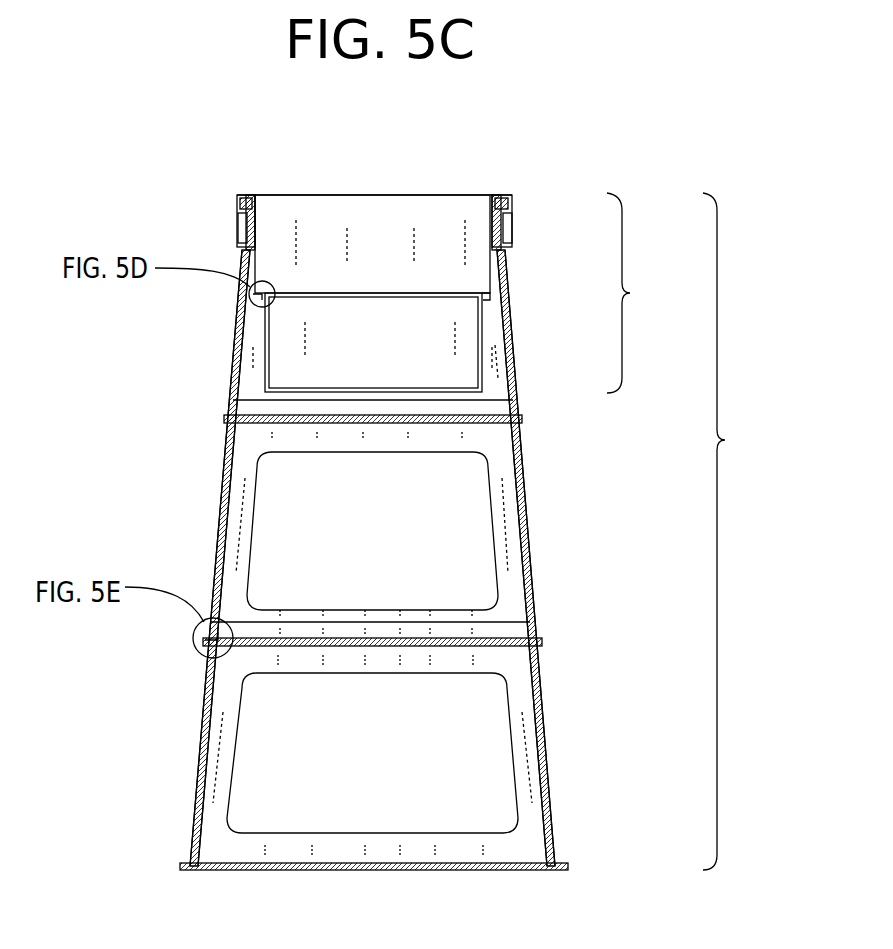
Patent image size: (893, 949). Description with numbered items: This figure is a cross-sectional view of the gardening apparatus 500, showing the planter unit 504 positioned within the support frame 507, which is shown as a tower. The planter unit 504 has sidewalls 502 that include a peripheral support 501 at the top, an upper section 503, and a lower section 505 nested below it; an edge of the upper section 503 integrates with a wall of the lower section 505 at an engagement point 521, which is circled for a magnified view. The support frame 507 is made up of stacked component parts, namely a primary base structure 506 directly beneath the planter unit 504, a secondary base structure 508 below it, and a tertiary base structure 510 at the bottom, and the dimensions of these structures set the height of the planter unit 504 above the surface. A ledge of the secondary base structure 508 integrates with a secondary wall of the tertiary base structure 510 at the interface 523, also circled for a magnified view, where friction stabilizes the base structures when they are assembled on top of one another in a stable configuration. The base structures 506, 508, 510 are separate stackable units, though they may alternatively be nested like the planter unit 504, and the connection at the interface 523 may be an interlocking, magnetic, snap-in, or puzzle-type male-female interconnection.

The gardening apparatus 500 is at (442, 158).
The peripheral support 501 is at (238, 210).
The sidewalls 502 is at (427, 318).
The upper section 503 is at (400, 279).
The planter unit 504 is at (647, 293).
The lower section 505 is at (408, 350).
The primary base structure 506 is at (493, 378).
The support frame 507 is at (745, 531).
The secondary base structure 508 is at (507, 590).
The tertiary base structure 510 is at (510, 848).
The engagement point 521 is at (238, 312).
The interface 523 is at (197, 648).